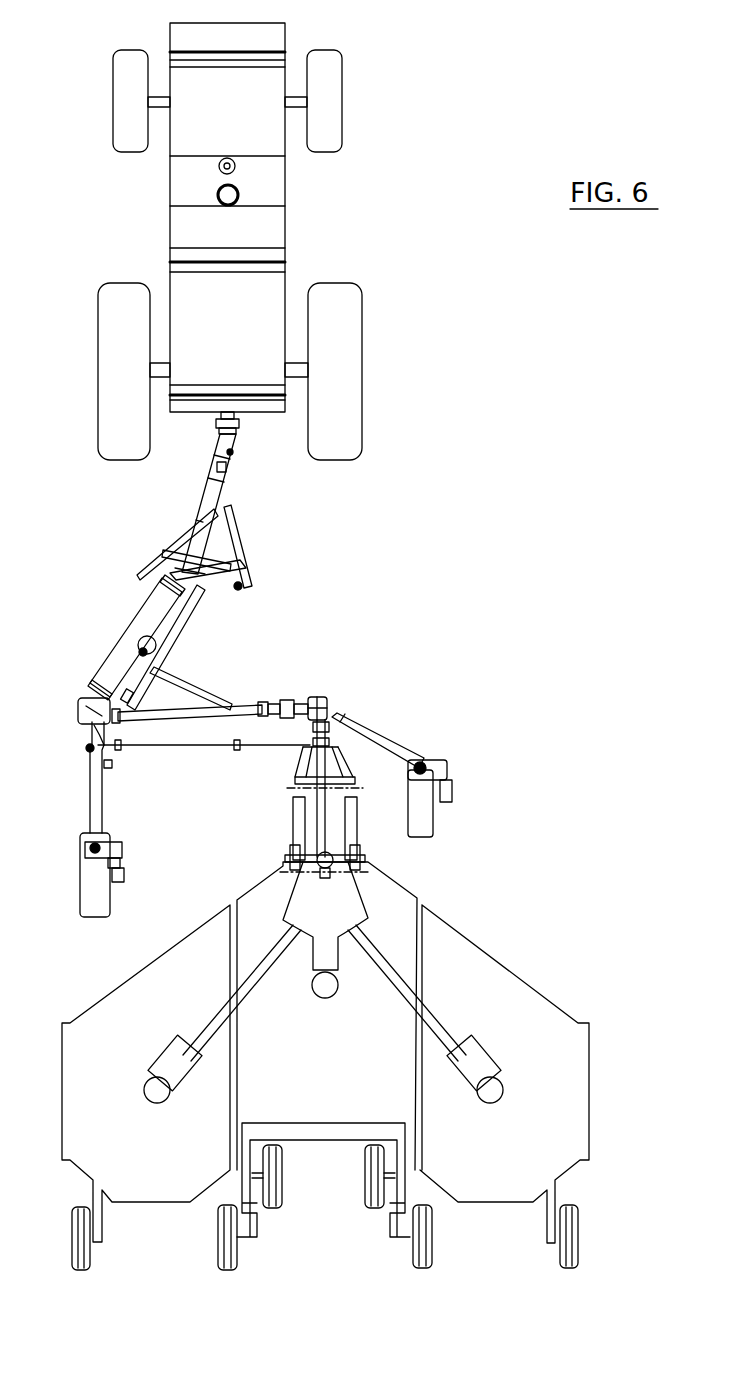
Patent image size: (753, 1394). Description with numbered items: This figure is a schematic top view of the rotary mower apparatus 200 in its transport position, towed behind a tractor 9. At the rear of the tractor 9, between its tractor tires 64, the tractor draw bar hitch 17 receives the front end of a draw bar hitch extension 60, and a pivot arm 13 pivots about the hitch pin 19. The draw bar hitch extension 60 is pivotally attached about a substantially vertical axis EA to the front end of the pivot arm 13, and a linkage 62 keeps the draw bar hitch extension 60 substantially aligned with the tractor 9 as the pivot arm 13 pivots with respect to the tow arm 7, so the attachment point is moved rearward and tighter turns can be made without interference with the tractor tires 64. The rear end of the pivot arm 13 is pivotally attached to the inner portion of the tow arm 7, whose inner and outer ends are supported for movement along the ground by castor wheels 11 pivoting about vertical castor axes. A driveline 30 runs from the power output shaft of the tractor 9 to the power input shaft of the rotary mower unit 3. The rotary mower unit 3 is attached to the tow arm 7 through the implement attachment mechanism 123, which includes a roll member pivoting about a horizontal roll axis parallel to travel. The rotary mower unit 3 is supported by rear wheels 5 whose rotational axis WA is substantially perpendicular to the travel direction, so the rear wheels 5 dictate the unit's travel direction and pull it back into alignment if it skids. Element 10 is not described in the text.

The tractor 9 is at (278, 241).
The tractor tires 64 is at (362, 370).
The tractor draw bar hitch 17 is at (236, 433).
The hitch pin 19 is at (237, 452).
The draw bar hitch extension 60 is at (230, 498).
The linkage 62 is at (222, 508).
The substantially vertical axis EA is at (218, 563).
The driveline 30 is at (137, 630).
The pivot arm 13 is at (180, 625).
The tow arm 7 is at (192, 747).
The hydraulic cylinder 10 is at (80, 865).
The implement attachment mechanism 123 is at (395, 753).
The castor wheel 11 is at (435, 813).
The rotary mower unit 3 is at (366, 1068).
The rear wheels 5 is at (432, 1242).
The rotational axis WA is at (580, 1238).
The rotary mower apparatus 200 is at (594, 508).